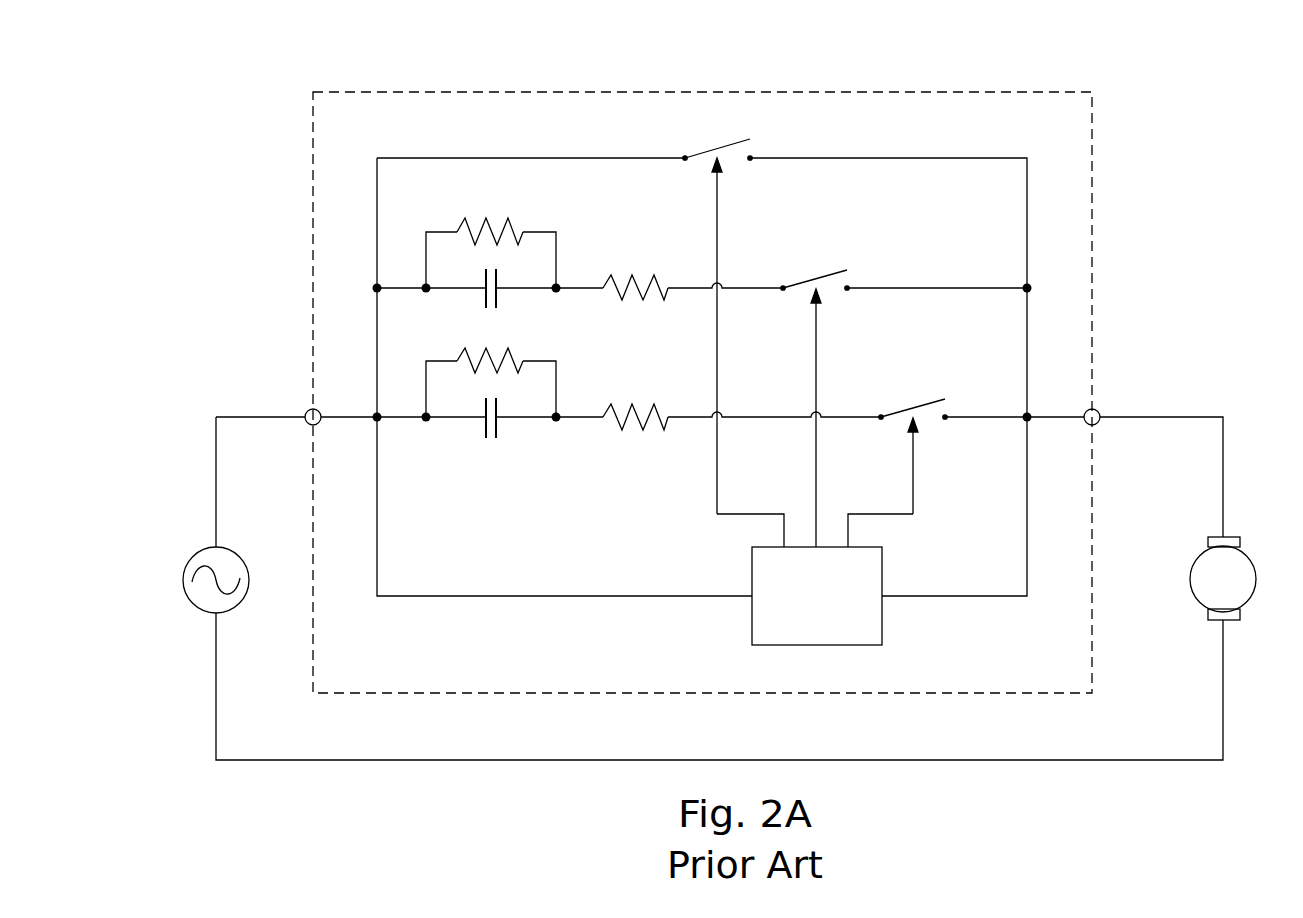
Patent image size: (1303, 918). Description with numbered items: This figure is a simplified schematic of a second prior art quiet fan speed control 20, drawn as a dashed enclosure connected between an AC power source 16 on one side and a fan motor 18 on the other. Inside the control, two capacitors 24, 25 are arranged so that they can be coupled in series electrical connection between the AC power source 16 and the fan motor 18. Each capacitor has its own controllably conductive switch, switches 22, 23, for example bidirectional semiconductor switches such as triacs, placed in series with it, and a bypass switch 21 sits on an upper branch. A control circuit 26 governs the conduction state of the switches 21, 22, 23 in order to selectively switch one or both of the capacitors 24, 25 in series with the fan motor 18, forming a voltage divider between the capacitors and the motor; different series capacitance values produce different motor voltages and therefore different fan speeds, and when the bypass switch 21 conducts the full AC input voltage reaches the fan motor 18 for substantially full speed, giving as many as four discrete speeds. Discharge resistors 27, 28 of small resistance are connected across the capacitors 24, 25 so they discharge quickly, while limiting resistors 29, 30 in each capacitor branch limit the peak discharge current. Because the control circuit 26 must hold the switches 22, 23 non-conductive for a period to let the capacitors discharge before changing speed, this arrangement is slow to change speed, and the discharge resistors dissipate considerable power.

The AC power source 16 is at (242, 600).
The fan motor 18 is at (1252, 560).
The fan speed control 20 is at (749, 92).
The bypass switch 21 is at (722, 148).
The controllably conductive switch 22 is at (802, 277).
The controllably conductive switch 23 is at (903, 409).
The capacitor 24 is at (497, 298).
The capacitor 25 is at (500, 426).
The control circuit 26 is at (843, 632).
The discharge resistor 27 is at (506, 233).
The discharge resistor 28 is at (462, 350).
The limiting resistor 29 is at (647, 279).
The limiting resistor 30 is at (648, 408).